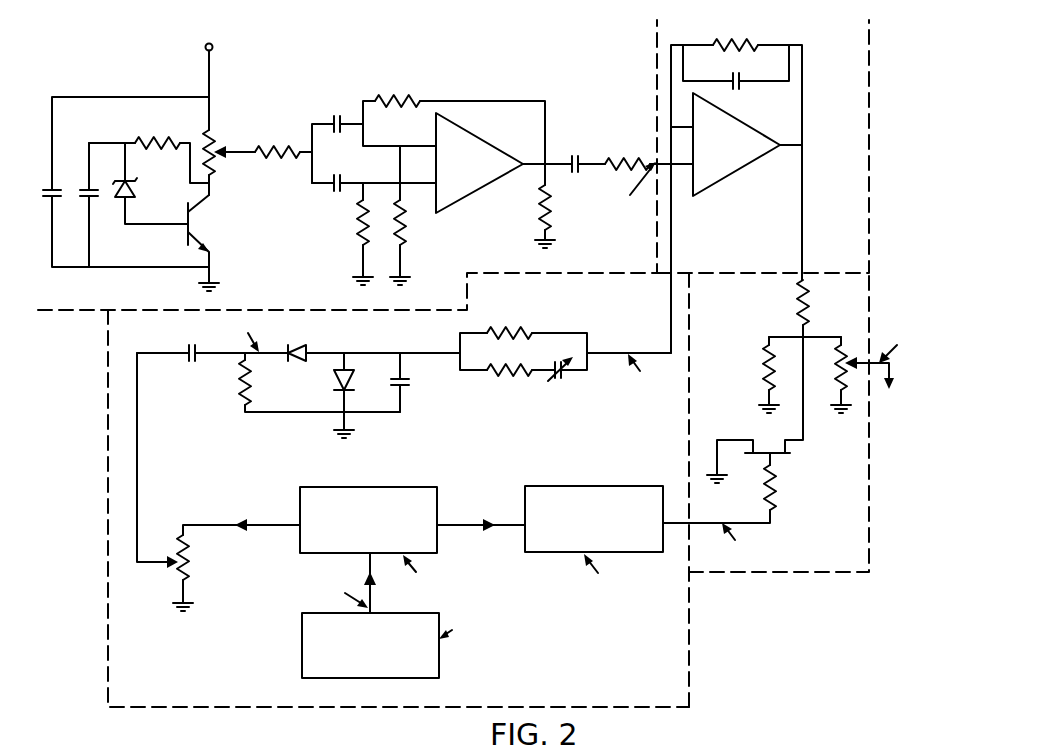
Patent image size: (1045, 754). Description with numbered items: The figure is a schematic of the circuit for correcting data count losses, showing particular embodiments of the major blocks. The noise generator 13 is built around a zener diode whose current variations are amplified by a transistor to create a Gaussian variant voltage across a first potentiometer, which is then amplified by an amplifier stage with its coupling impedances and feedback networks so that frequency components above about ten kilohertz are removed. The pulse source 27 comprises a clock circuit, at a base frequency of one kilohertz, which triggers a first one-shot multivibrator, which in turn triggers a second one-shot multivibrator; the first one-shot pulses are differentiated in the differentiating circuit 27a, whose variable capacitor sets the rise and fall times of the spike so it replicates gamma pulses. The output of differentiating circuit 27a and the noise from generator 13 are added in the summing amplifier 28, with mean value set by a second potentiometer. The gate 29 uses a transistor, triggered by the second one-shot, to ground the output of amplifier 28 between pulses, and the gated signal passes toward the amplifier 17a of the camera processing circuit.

The noise generator 13 is at (81, 294).
The pulse generator 27 is at (680, 650).
The differentiating circuit 27a is at (657, 428).
The summing amplifier 28 is at (857, 175).
The analog switch 29 is at (858, 491).
The amplifier 17a is at (918, 422).